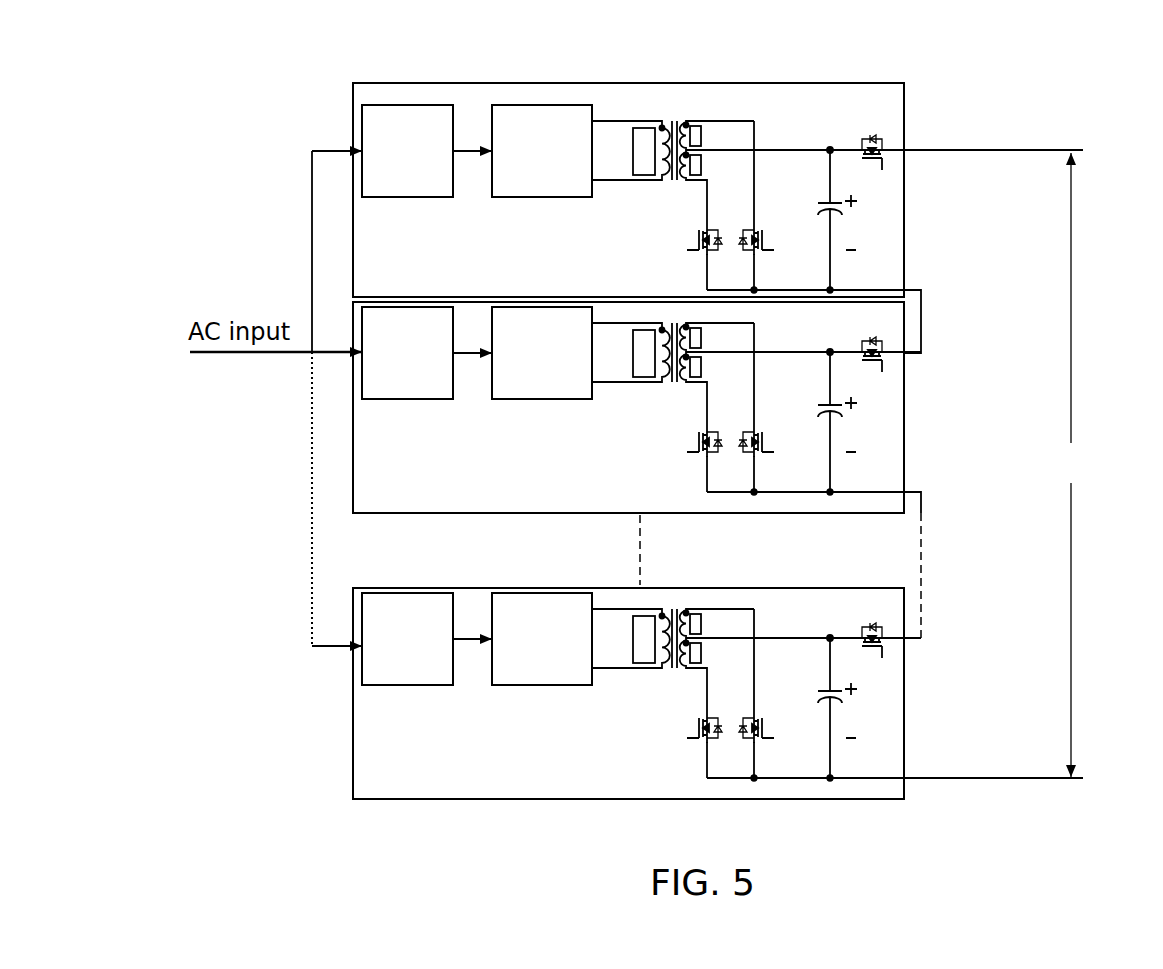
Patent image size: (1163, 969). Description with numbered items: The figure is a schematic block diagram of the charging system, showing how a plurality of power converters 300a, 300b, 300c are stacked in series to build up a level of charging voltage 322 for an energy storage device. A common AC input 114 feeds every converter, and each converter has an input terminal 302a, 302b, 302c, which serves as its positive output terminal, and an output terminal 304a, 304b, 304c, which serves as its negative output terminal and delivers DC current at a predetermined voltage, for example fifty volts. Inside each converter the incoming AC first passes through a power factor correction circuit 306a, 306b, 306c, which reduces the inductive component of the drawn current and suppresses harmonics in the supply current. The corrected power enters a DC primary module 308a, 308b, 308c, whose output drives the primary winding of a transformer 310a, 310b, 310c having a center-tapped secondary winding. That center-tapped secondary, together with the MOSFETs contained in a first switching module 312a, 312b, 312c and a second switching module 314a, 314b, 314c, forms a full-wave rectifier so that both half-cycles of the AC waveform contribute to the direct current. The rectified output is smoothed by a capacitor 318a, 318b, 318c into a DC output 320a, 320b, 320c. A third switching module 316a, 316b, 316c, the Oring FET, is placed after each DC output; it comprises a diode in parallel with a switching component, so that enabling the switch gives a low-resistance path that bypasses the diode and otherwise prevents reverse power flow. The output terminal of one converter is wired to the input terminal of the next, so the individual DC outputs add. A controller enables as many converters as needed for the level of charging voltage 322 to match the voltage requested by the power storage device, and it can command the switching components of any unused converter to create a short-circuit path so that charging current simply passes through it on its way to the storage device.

The AC input line 114 is at (310, 243).
The power converter 300a is at (670, 285).
The power converter 300b is at (353, 402).
The power converter 300c is at (563, 693).
The input terminal 302a is at (987, 116).
The input terminal 302b is at (910, 355).
The input terminal 302c is at (943, 663).
The output terminal 304a is at (866, 314).
The output terminal 304b is at (915, 495).
The output terminal 304c is at (895, 809).
The power factor correction circuit 306a is at (427, 119).
The power factor correction circuit 306b is at (410, 400).
The power factor correction circuit 306c is at (427, 608).
The DC primary module 308a is at (542, 119).
The DC primary module 308b is at (500, 400).
The DC primary module 308c is at (552, 608).
The transformer 310a is at (724, 136).
The transformer 310b is at (656, 393).
The transformer 310c is at (724, 631).
The switching module 312a is at (662, 258).
The switching module 312b is at (695, 460).
The switching module 312c is at (662, 745).
The switching module 314a is at (781, 225).
The switching module 314b is at (765, 420).
The switching module 314c is at (782, 713).
The third switching module 316a is at (920, 131).
The third switching module 316b is at (905, 345).
The third switching module 316c is at (867, 628).
The capacitor 318a is at (902, 218).
The capacitor 318b is at (838, 424).
The capacitor 318c is at (856, 736).
The DC output 320a is at (917, 221).
The DC output 320b is at (872, 426).
The DC output 320c is at (927, 716).
The level of charging voltage 322 is at (1085, 450).